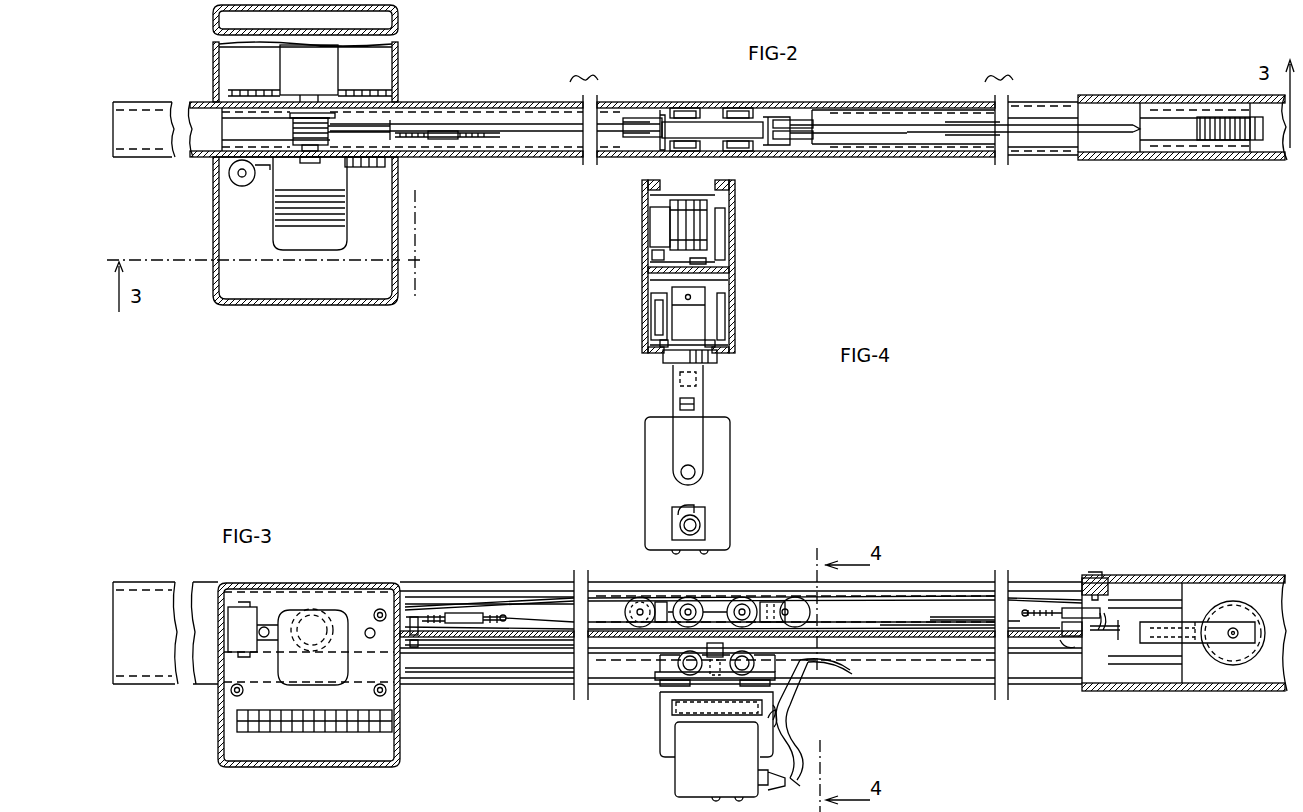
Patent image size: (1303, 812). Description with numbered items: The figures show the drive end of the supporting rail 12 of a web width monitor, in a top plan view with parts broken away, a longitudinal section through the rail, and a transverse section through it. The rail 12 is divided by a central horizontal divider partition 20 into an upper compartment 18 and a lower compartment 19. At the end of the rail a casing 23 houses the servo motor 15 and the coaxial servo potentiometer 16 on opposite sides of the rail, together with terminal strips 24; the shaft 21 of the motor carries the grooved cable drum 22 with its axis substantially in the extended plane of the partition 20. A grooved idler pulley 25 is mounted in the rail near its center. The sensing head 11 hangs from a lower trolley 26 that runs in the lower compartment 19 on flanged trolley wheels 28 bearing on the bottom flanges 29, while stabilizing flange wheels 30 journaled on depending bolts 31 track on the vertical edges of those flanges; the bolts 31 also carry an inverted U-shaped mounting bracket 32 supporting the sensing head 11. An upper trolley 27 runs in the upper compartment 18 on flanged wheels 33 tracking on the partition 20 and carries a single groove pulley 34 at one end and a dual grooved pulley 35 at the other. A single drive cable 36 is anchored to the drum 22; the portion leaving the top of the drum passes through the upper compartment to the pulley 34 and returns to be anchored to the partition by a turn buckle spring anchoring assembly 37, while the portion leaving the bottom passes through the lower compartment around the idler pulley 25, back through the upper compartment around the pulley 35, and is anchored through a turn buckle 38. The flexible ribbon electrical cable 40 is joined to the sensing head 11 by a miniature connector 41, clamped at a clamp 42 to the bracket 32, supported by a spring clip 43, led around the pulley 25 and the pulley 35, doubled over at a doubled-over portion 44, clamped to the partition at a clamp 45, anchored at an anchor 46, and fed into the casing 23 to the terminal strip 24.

In FIG. 4, the sensing head 11 is at (732, 467).
In FIG. 3, the sensing head 11 is at (680, 788).
In FIG. 2, the supporting rail 12 is at (472, 100).
In FIG. 4, the supporting rail 12 is at (736, 238).
In FIG. 3, the supporting rail 12 is at (455, 582).
In FIG. 2, the servo motor 15 is at (273, 214).
In FIG. 3, the servo motor 15 is at (285, 660).
In FIG. 2, the servo potentiometer 16 is at (280, 62).
In FIG. 2, the upper compartment 18 is at (512, 145).
In FIG. 4, the upper compartment 18 is at (718, 204).
In FIG. 3, the upper compartment 18 is at (425, 590).
In FIG. 4, the lower compartment 19 is at (718, 282).
In FIG. 3, the lower compartment 19 is at (548, 668).
In FIG. 4, the divider partition 20 is at (648, 278).
In FIG. 3, the divider partition 20 is at (905, 632).
In FIG. 2, the shaft 21 is at (304, 158).
In FIG. 2, the cable drum 22 is at (292, 125).
In FIG. 3, the cable drum 22 is at (300, 648).
In FIG. 2, the casing 23 is at (265, 305).
In FIG. 3, the casing 23 is at (218, 747).
In FIG. 2, the terminal strips 24 is at (362, 90).
In FIG. 3, the terminal strips 24 is at (335, 733).
In FIG. 2, the idler pulley 25 is at (1262, 152).
In FIG. 3, the idler pulley 25 is at (1238, 665).
In FIG. 4, the lower trolley 26 is at (690, 322).
In FIG. 3, the lower trolley 26 is at (660, 684).
In FIG. 2, the upper trolley 27 is at (712, 120).
In FIG. 4, the upper trolley 27 is at (655, 227).
In FIG. 3, the upper trolley 27 is at (722, 604).
In FIG. 4, the flanged trolley wheels 28 is at (725, 302).
In FIG. 3, the flanged trolley wheels 28 is at (680, 664).
In FIG. 4, the bottom flanges 29 is at (650, 358).
In FIG. 3, the bottom flanges 29 is at (472, 685).
In FIG. 4, the stabilizing flange wheels 30 is at (665, 365).
In FIG. 3, the stabilizing flange wheels 30 is at (790, 710).
In FIG. 4, the bolts 31 is at (675, 380).
In FIG. 3, the bolts 31 is at (760, 708).
In FIG. 4, the mounting bracket 32 is at (705, 400).
In FIG. 3, the mounting bracket 32 is at (662, 740).
In FIG. 2, the flanged wheels 33 is at (686, 106).
In FIG. 4, the flanged wheels 33 is at (720, 222).
In FIG. 2, the pulley 34 is at (632, 150).
In FIG. 3, the pulley 34 is at (640, 598).
In FIG. 2, the pulley 35 is at (790, 118).
In FIG. 3, the pulley 35 is at (788, 598).
In FIG. 2, the drive cable 36 is at (530, 122).
In FIG. 3, the drive cable 36 is at (518, 600).
In FIG. 2, the turn buckle spring anchoring assembly 37 is at (466, 140).
In FIG. 3, the turn buckle spring anchoring assembly 37 is at (465, 612).
In FIG. 3, the turn buckle 38 is at (1075, 606).
In FIG. 3, the electrical cable 40 is at (976, 630).
In FIG. 3, the miniature connector 41 is at (800, 785).
In FIG. 3, the clamp 42 is at (790, 735).
In FIG. 3, the spring clip 43 is at (852, 686).
In FIG. 3, the doubled-over portion 44 is at (1100, 630).
In FIG. 3, the clamp 45 is at (1078, 640).
In FIG. 3, the anchor 46 is at (418, 638).